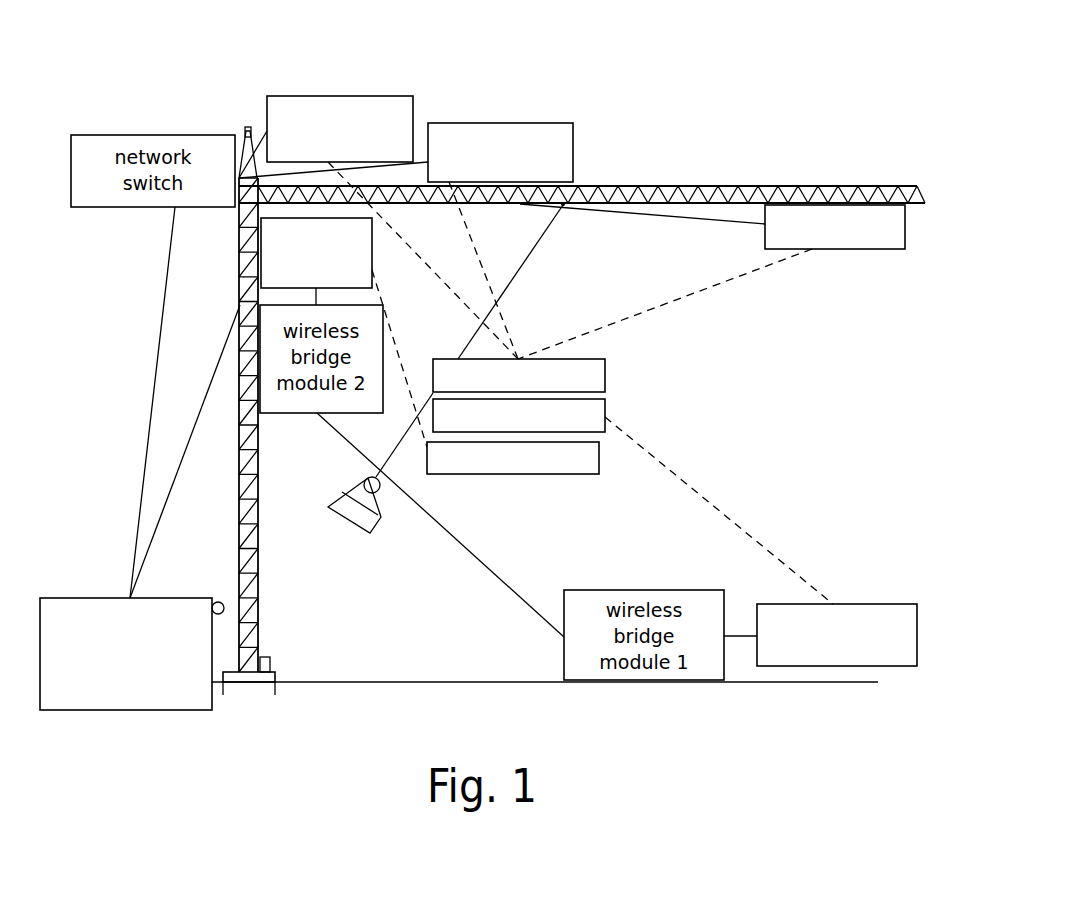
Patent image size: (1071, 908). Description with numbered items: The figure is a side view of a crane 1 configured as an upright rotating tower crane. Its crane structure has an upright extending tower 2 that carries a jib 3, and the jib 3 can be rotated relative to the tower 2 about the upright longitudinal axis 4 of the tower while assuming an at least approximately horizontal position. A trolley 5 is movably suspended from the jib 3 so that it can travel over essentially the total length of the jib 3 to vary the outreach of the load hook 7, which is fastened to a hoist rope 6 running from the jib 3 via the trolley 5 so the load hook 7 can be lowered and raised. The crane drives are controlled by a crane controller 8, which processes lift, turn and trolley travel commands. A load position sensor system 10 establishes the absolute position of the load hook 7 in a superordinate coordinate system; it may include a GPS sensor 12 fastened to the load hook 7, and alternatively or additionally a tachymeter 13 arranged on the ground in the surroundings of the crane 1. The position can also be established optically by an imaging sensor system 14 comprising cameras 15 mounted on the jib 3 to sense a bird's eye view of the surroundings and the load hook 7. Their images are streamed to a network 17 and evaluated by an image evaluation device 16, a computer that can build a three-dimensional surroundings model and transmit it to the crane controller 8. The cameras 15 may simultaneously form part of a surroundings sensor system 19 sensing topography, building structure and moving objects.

The crane 1 is at (134, 338).
The tower 2 is at (260, 538).
The jib 3 is at (776, 186).
The upright longitudinal axis 4 is at (247, 127).
The trolley 5 is at (563, 206).
The hoist rope 6 is at (527, 258).
The load hook 7 is at (383, 494).
The crane controller 8 is at (372, 258).
The load position sensor system 10 is at (877, 681).
The GPS sensor 12 is at (364, 481).
The tachymeter 13 is at (876, 604).
The imaging sensor system 14 is at (886, 257).
The cameras 15 is at (382, 96).
The image evaluation device 16 is at (108, 606).
The network 17 is at (218, 601).
The surroundings sensor system 19 is at (331, 96).